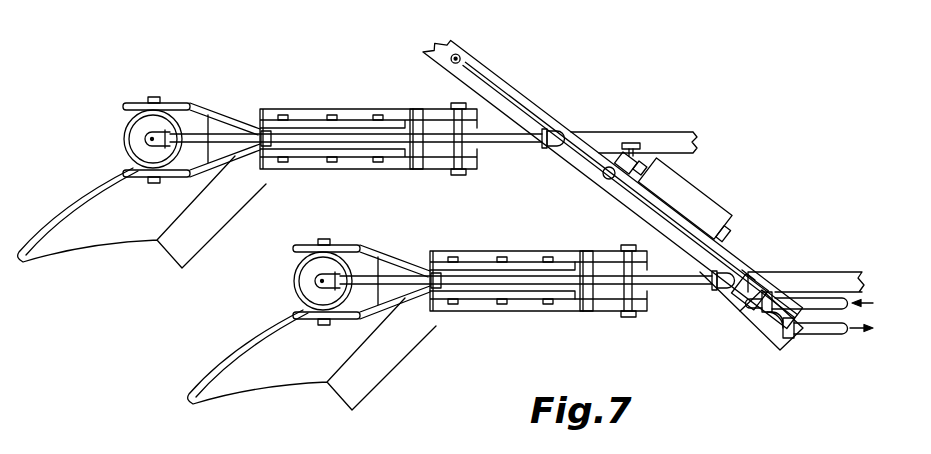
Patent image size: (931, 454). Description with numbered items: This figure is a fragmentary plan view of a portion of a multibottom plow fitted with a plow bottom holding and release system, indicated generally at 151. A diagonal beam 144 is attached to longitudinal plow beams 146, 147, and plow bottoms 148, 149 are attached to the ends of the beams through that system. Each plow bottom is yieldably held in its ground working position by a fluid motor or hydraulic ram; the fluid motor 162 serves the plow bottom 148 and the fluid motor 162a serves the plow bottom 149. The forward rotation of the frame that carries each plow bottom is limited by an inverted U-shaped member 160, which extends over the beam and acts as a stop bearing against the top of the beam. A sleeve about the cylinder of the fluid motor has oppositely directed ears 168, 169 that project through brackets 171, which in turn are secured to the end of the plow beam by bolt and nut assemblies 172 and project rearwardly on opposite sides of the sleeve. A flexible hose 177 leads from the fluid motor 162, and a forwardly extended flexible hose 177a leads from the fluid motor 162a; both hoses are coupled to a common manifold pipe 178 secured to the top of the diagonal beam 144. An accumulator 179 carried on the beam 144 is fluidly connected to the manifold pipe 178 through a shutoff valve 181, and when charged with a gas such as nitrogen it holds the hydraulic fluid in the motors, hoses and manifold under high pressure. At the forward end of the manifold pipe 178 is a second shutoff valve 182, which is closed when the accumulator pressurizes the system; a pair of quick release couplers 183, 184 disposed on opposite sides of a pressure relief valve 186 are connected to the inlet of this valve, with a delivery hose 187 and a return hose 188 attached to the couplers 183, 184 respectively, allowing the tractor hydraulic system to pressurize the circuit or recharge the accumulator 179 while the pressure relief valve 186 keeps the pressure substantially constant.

The diagonal beam 144 is at (490, 63).
The longitudinal plow beam 146 is at (803, 274).
The longitudinal plow beam 147 is at (593, 134).
The plow bottom 148 is at (242, 373).
The plow bottom 149 is at (142, 225).
The plow bottom holding and release system 151 is at (341, 233).
The inverted U-shaped member 160 is at (582, 253).
The fluid motor 162 is at (282, 277).
The fluid motor 162a is at (107, 139).
The ear 168 is at (323, 321).
The ear 169 is at (322, 237).
The brackets 171 is at (370, 243).
The bolt and nut assemblies 172 is at (543, 257).
The flexible hose 177 is at (677, 285).
The flexible hose 177a is at (367, 108).
The manifold pipe 178 is at (510, 97).
The accumulator 179 is at (695, 200).
The shutoff valve 181 is at (620, 147).
The shutoff valve 182 is at (738, 308).
The quick release coupler 183 is at (767, 292).
The quick release coupler 184 is at (788, 338).
The pressure relief valve 186 is at (768, 330).
The delivery hose 187 is at (823, 303).
The return hose 188 is at (835, 334).